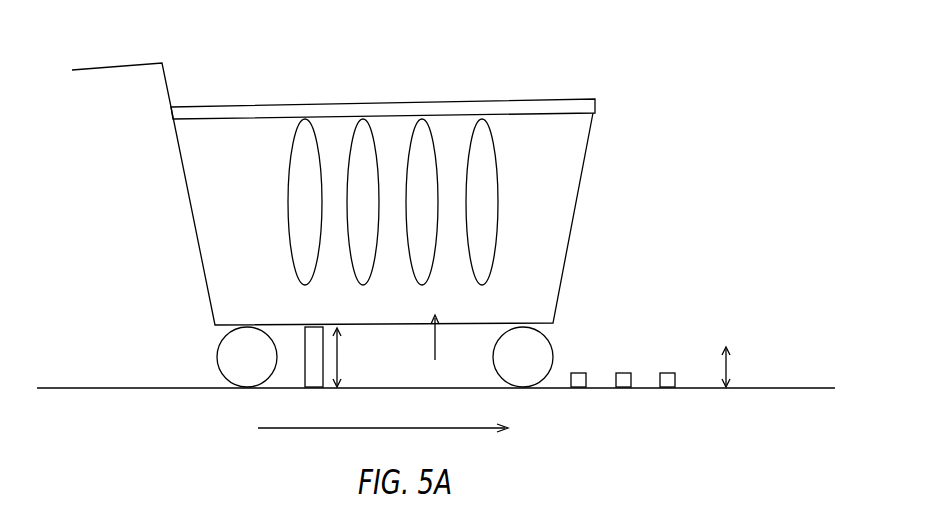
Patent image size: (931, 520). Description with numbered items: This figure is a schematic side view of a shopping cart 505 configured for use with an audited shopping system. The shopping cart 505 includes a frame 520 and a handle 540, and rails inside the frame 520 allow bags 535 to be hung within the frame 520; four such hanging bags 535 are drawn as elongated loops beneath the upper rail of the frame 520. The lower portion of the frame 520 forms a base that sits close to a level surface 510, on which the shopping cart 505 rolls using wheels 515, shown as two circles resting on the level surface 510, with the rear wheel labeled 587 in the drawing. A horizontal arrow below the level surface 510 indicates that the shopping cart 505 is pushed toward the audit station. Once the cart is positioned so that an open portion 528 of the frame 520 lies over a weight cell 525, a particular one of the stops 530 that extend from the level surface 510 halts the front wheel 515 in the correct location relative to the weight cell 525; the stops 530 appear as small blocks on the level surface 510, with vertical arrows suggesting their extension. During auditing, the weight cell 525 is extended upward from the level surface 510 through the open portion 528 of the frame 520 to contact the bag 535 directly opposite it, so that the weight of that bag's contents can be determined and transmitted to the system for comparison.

The shopping cart 505 is at (548, 100).
The level surface 510 is at (745, 388).
The wheels 515 is at (218, 367).
The frame 520 is at (572, 230).
The weight cell 525 is at (345, 357).
The open portion 528 is at (437, 342).
The stops 530 is at (625, 358).
The bags 535 is at (292, 237).
The handle 540 is at (167, 78).
The rear wheel 587 is at (553, 323).